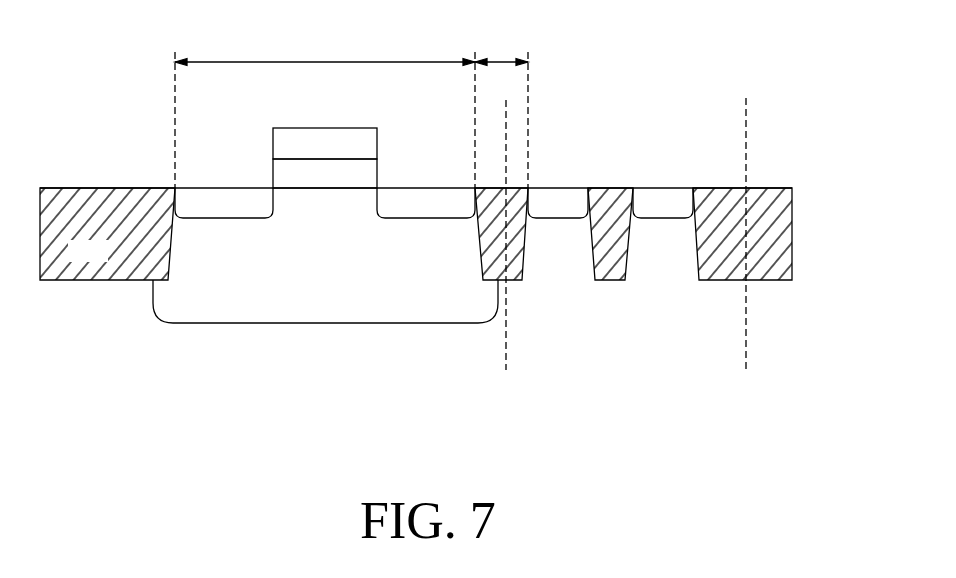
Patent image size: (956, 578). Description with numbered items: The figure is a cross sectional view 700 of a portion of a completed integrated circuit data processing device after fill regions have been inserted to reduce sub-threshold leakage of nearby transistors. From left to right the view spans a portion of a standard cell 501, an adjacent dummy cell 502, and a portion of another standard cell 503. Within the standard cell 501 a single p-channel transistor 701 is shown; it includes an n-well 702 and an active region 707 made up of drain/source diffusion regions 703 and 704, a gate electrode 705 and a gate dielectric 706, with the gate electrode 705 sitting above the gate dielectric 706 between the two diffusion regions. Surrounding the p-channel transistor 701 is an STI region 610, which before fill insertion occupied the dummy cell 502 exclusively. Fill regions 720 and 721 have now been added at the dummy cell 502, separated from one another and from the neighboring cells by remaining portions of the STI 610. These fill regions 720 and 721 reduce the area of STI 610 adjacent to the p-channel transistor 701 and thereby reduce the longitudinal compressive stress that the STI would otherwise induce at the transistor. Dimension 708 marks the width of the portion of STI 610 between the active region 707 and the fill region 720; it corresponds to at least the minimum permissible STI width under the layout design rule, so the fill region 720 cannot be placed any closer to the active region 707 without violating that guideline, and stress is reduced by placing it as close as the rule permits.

The cross sectional view 700 is at (300, 503).
The p-channel transistor 701 is at (314, 156).
The n-well 702 is at (252, 323).
The drain/source diffusion region 703 is at (252, 218).
The drain/source diffusion region 704 is at (402, 218).
The gate electrode 705 is at (377, 148).
The gate dielectric 706 is at (377, 178).
The active region 707 is at (400, 62).
The dimension 708 is at (500, 62).
The fill region 720 is at (557, 195).
The fill region 721 is at (661, 195).
The STI region 610 is at (148, 234).
The standard cell 501 is at (411, 358).
The dummy cell 502 is at (627, 358).
The standard cell 503 is at (777, 358).